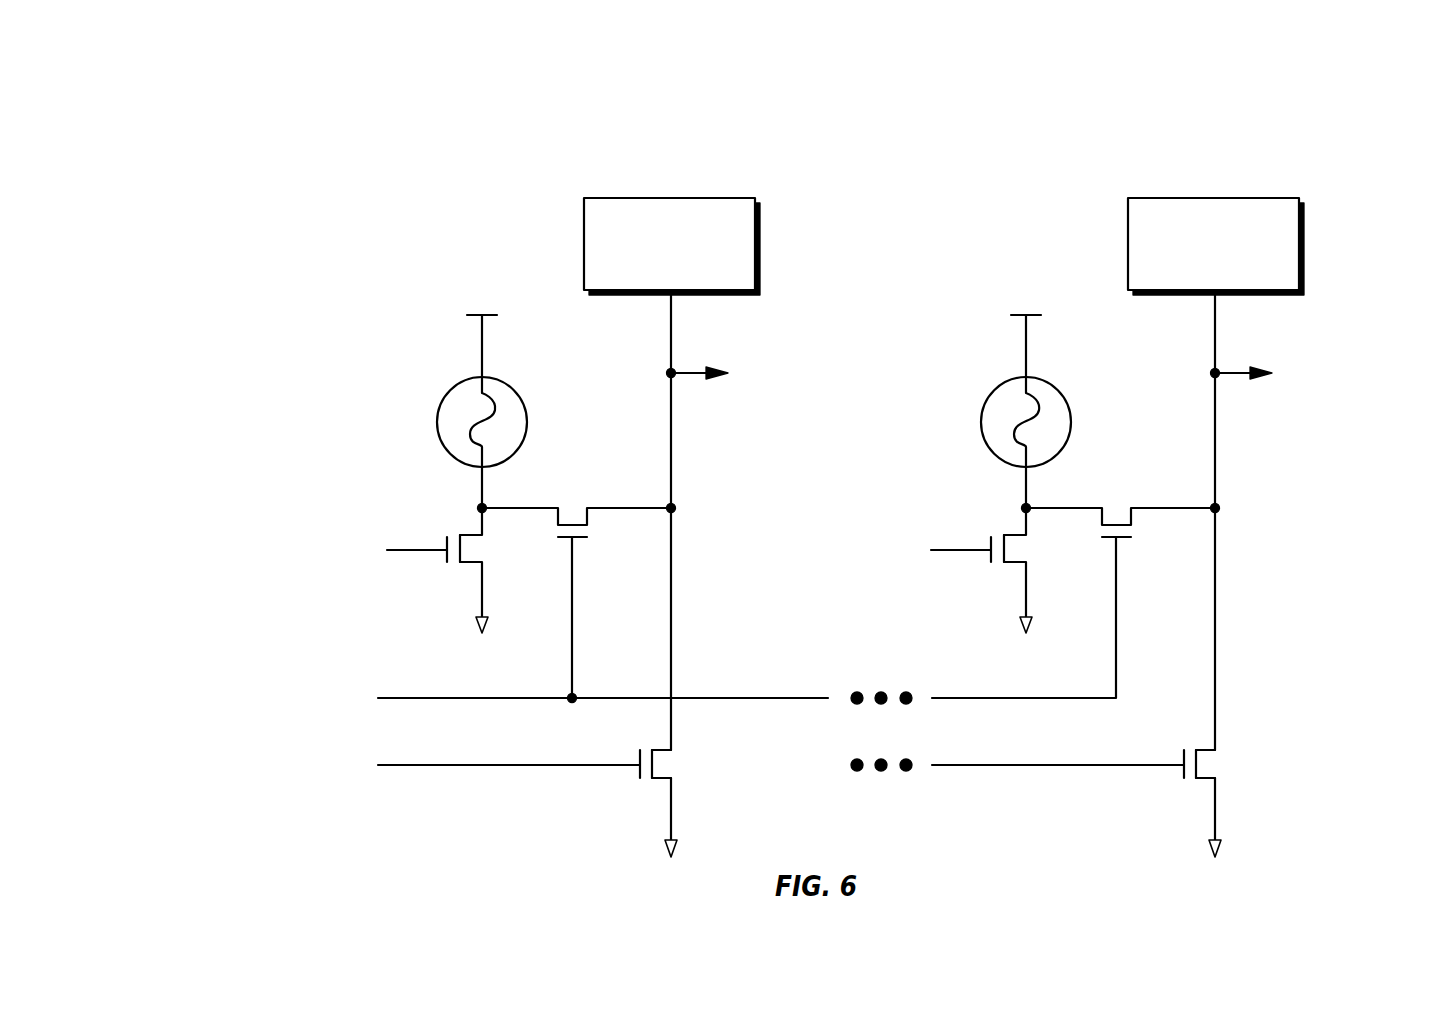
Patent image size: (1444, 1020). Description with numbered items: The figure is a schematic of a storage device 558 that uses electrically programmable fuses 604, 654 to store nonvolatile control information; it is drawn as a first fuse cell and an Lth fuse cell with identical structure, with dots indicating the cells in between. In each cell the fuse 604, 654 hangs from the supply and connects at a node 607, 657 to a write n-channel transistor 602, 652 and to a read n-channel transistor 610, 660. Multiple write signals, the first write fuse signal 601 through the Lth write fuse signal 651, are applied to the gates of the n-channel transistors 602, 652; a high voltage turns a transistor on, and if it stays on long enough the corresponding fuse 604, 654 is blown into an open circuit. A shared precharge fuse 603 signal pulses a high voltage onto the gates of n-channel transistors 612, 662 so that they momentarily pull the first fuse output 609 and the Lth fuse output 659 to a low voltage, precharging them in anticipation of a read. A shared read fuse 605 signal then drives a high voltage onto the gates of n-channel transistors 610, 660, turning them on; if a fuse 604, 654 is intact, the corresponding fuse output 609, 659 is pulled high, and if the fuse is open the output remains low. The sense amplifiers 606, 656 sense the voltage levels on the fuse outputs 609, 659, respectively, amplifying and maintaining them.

The storage device 558 is at (1200, 134).
The write fuse 1 601 is at (442, 540).
The n-channel transistor 602 is at (443, 558).
The precharge fuse 603 is at (452, 769).
The fuse 604 is at (472, 442).
The read fuse 605 is at (452, 702).
The sense amplifier 606 is at (592, 198).
The node 607 is at (530, 506).
The fuse out 1 609 is at (690, 375).
The n-channel transistor 610 is at (585, 540).
The n-channel transistor 612 is at (637, 768).
The write fuse L 651 is at (986, 540).
The n-channel transistor 652 is at (987, 558).
The fuse 654 is at (1016, 442).
The sense amplifier 656 is at (1136, 198).
The node 657 is at (1074, 506).
The fuse out L 659 is at (1234, 375).
The n-channel transistor 660 is at (1129, 540).
The n-channel transistor 662 is at (1181, 768).